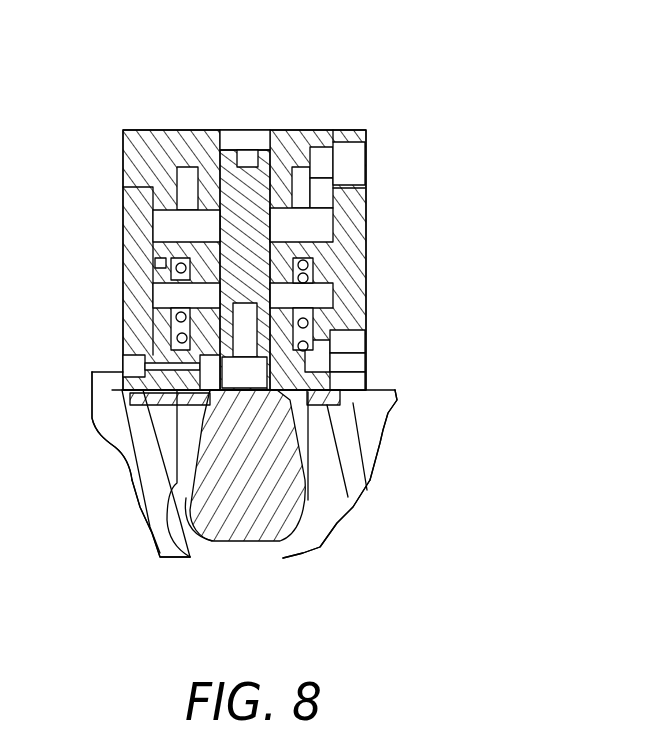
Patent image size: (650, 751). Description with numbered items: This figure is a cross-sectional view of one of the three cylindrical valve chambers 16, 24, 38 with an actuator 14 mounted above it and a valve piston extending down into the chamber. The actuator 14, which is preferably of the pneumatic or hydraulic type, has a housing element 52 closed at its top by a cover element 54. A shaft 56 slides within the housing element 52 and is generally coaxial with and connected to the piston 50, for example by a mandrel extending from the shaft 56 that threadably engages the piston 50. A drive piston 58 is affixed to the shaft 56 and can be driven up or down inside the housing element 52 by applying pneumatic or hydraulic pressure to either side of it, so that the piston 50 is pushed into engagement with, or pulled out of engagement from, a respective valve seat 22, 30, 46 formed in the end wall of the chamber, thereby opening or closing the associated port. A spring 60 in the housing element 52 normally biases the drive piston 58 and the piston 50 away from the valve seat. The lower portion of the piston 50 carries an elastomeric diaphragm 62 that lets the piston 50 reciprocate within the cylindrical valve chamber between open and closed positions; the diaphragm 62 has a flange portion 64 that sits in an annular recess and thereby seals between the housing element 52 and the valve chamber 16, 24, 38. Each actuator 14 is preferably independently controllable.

The actuator 14 is at (407, 110).
The cover element 54 is at (162, 132).
The shaft 56 is at (258, 142).
The drive piston 58 is at (169, 252).
The spring 60 is at (306, 303).
The housing element 52 is at (140, 320).
The piston 50 is at (278, 497).
The elastomeric diaphragm 62 is at (297, 417).
The flange portion 64 is at (207, 412).
The cylindrical valve chamber 16 is at (185, 557).
The cylindrical valve chamber 24 is at (112, 426).
The cylindrical valve chamber 38 is at (161, 518).
The valve seat 22 is at (295, 557).
The valve seat 30 is at (383, 435).
The valve seat 46 is at (326, 519).